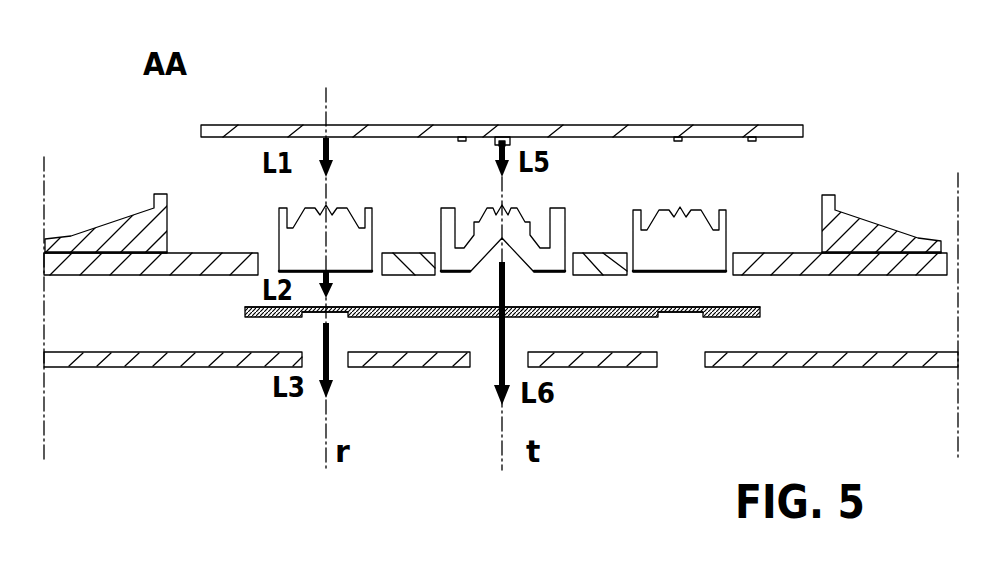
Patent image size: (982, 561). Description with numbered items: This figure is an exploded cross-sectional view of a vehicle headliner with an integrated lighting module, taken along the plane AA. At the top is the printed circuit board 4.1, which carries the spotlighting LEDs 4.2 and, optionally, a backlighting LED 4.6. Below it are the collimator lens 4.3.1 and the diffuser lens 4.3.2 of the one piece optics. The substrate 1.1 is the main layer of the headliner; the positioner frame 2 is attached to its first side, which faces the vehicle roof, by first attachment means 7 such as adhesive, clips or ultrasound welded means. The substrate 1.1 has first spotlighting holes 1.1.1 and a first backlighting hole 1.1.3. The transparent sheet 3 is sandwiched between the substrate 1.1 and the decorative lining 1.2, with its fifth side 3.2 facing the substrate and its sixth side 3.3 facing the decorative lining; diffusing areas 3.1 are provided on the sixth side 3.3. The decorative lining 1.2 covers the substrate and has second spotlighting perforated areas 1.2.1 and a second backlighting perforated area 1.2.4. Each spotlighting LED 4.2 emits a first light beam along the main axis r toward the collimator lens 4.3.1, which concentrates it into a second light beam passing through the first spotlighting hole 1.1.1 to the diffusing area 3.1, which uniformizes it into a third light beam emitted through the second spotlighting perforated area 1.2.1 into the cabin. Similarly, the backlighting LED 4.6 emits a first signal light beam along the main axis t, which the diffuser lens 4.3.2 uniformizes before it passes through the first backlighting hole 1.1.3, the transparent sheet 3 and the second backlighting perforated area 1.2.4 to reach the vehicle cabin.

The positioner frame 2 is at (123, 228).
The first attachment means 7 is at (96, 251).
The substrate 1.1 is at (767, 262).
The first spotlighting holes 1.1.1 is at (270, 259).
The first backlighting hole 1.1.3 is at (570, 263).
The decorative lining 1.2 is at (860, 355).
The second spotlighting perforated areas 1.2.1 is at (677, 358).
The second backlighting perforated area 1.2.4 is at (492, 360).
The transparent sheet 3 is at (762, 312).
The diffusing areas 3.1 is at (677, 313).
The fifth side 3.2 is at (615, 307).
The sixth side 3.3 is at (577, 317).
The printed circuit board 4.1 is at (732, 130).
The spotlighting LEDs 4.2 is at (679, 142).
The collimator lens 4.3.1 is at (645, 247).
The diffuser lens 4.3.2 is at (488, 230).
The backlighting LED 4.6 is at (503, 136).